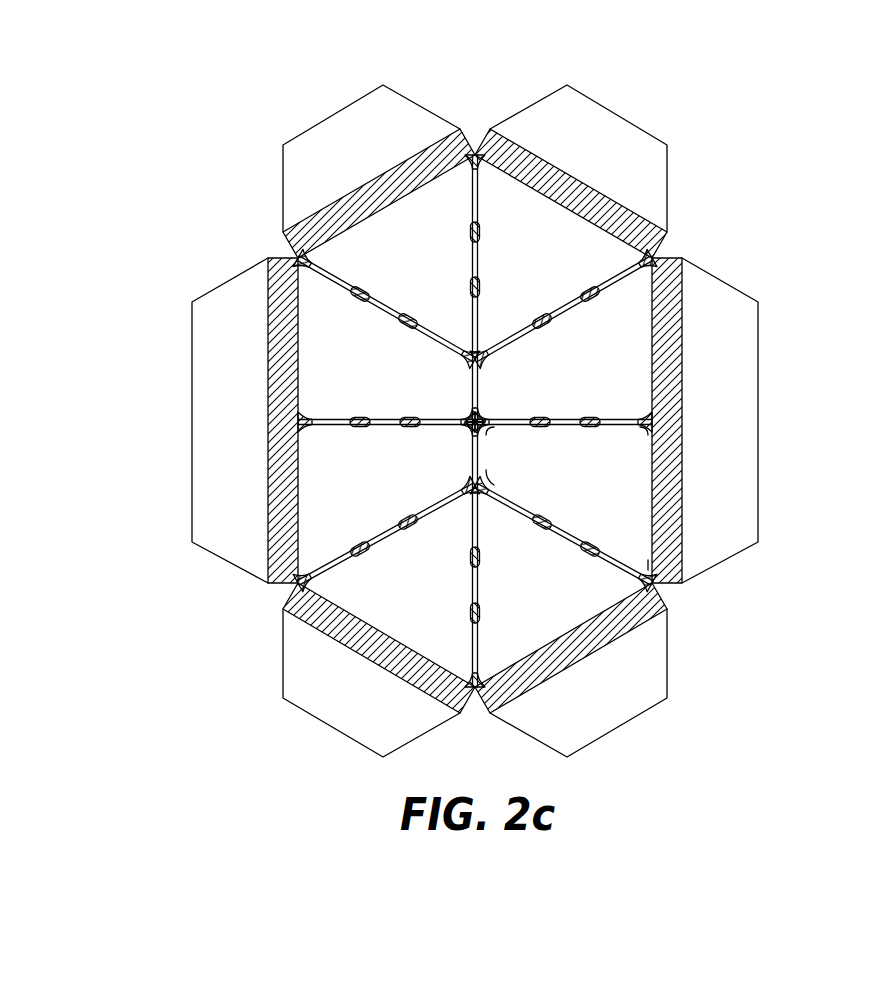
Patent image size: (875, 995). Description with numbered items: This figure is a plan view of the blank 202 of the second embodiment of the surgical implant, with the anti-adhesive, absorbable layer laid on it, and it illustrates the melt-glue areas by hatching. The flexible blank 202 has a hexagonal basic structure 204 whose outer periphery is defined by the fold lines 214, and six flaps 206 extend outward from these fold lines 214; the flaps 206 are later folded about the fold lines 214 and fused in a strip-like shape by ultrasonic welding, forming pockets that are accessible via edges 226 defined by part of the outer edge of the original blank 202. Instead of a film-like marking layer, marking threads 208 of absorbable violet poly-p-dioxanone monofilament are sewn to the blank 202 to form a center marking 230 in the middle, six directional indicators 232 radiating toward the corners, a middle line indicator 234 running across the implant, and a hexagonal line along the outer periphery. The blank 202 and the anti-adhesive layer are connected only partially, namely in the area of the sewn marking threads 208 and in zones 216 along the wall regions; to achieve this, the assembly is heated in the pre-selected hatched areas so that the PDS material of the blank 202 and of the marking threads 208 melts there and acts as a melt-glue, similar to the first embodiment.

The blank 202 is at (718, 565).
The basic structure 204 is at (602, 495).
The flaps 206 is at (327, 145).
The marking threads 208 is at (560, 535).
The fold lines 214 is at (668, 333).
The zones 216 is at (272, 562).
The edges 226 is at (760, 467).
The center marking 230 is at (490, 413).
The directional indicators 232 is at (556, 300).
The middle line indicator 234 is at (387, 430).